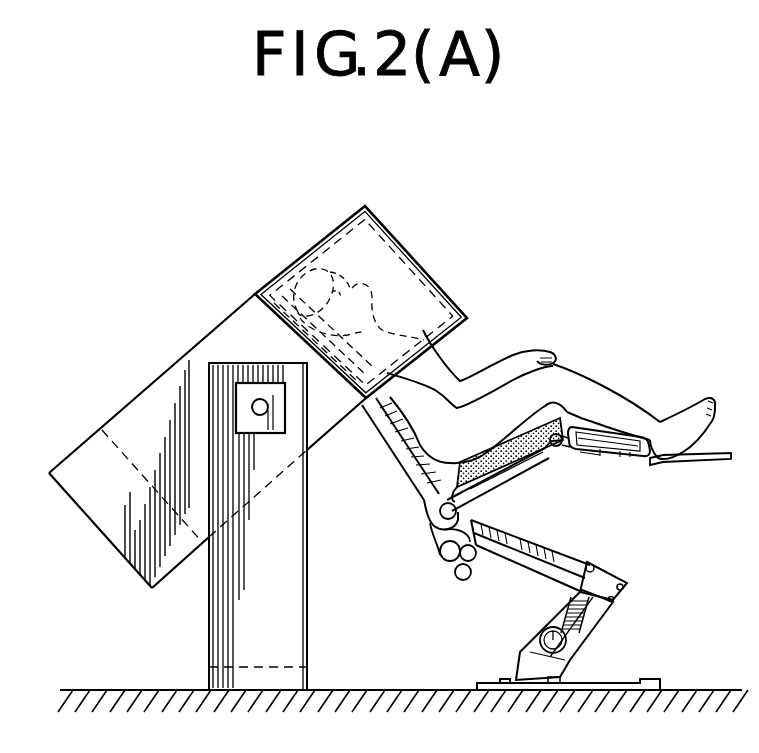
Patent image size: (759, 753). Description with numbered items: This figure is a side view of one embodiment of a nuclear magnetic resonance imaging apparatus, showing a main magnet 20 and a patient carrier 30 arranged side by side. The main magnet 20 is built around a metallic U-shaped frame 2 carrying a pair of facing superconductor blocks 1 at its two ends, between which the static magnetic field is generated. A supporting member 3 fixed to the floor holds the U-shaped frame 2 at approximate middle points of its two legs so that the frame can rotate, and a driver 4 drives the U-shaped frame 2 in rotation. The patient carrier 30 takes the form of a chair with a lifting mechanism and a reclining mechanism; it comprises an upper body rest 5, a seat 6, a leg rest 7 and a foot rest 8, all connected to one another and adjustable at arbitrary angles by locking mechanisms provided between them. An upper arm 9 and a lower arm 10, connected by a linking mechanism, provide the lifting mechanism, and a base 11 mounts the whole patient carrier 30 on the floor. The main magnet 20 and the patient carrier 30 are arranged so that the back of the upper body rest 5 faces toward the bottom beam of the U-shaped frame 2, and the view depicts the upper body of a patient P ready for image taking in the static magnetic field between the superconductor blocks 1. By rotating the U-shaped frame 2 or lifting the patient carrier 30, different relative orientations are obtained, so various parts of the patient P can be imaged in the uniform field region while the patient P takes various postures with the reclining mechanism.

The superconductor blocks 1 is at (333, 248).
The U-shaped frame 2 is at (140, 410).
The supporting member 3 is at (213, 623).
The driver 4 is at (284, 424).
The upper body rest 5 is at (405, 475).
The seat 6 is at (554, 453).
The leg rest 7 is at (647, 470).
The foot rest 8 is at (707, 463).
The upper arm 9 is at (520, 567).
The lower arm 10 is at (598, 640).
The base 11 is at (640, 688).
The main magnet 20 is at (222, 320).
The patient carrier 30 is at (437, 563).
The patient P is at (440, 362).